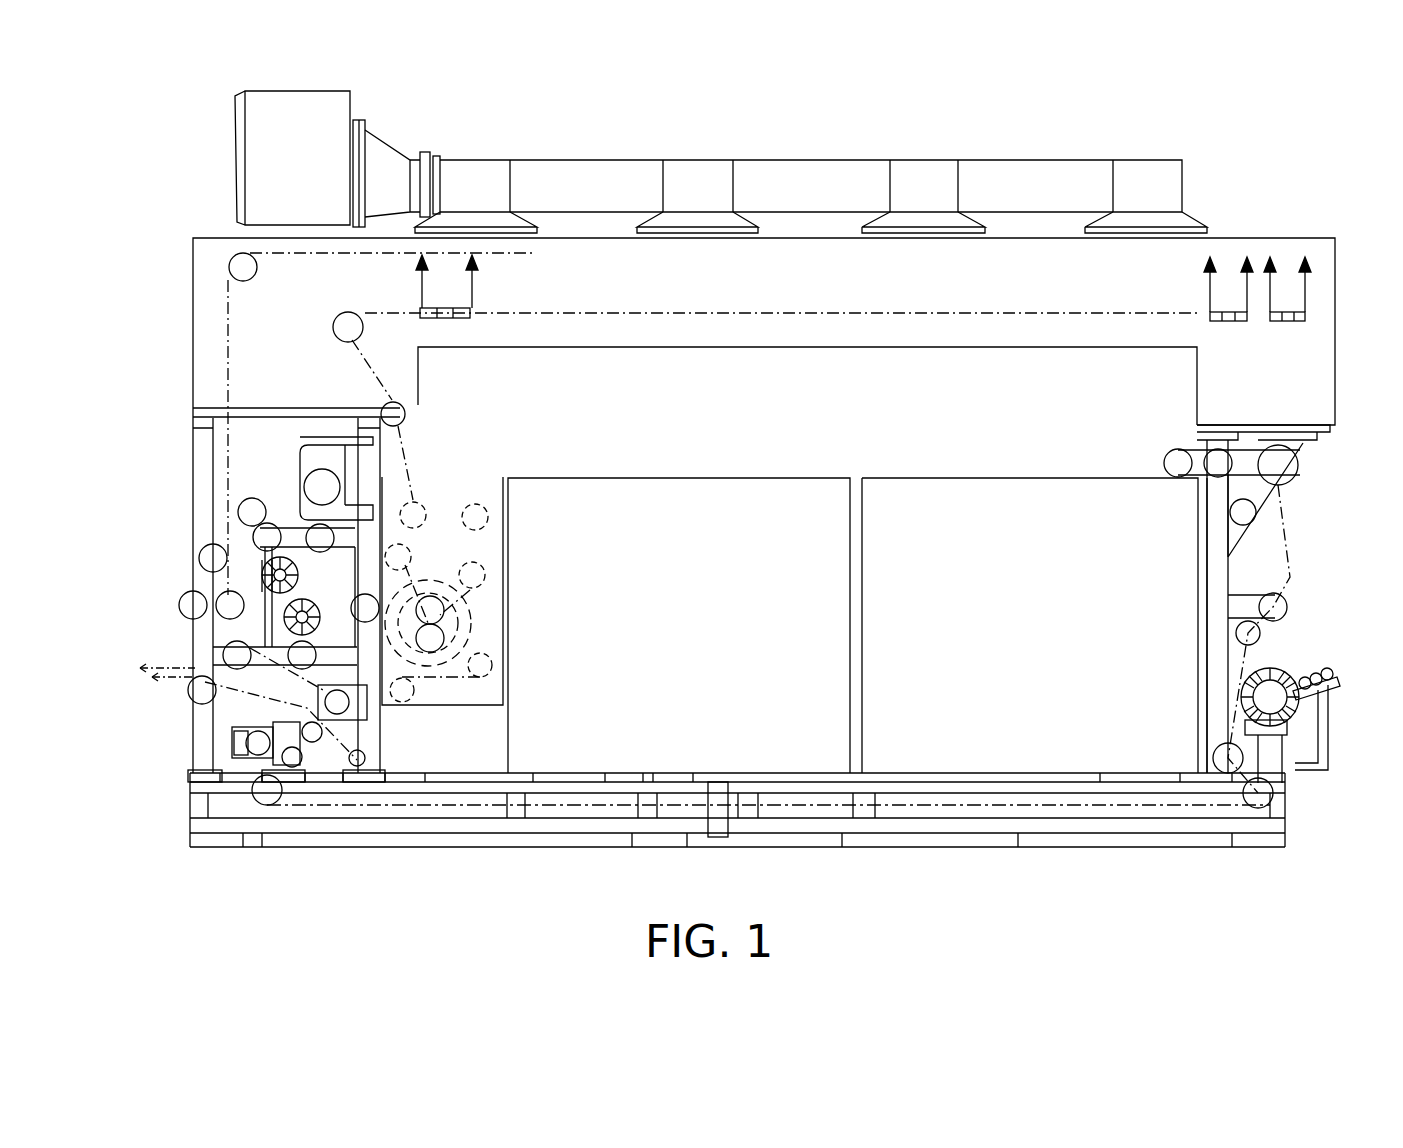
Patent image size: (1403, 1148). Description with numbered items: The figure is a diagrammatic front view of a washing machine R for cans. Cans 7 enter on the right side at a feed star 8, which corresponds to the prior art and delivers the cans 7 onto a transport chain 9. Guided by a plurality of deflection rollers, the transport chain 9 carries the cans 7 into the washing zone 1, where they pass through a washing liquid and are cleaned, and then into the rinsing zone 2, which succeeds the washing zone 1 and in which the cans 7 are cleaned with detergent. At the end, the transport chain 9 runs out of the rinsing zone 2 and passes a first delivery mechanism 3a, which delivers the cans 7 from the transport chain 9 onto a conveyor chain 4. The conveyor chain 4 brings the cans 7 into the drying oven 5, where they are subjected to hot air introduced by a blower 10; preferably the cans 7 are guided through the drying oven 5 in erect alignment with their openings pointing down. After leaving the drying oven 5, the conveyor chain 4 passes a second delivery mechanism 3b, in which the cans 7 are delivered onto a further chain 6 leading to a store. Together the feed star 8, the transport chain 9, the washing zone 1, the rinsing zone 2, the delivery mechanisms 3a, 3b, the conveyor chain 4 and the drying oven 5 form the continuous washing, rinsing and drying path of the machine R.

The washing zone 1 is at (1028, 633).
The rinsing zone 2 is at (690, 633).
The first delivery mechanism 3a is at (425, 572).
The second delivery mechanism 3b is at (250, 558).
The conveyor chain 4 is at (228, 383).
The drying oven 5 is at (822, 288).
The further chain 6 is at (185, 668).
The cans 7 is at (1325, 672).
The feed star 8 is at (1268, 670).
The transport chain 9 is at (493, 545).
The blower 10 is at (712, 150).
The washing machine R is at (1232, 205).